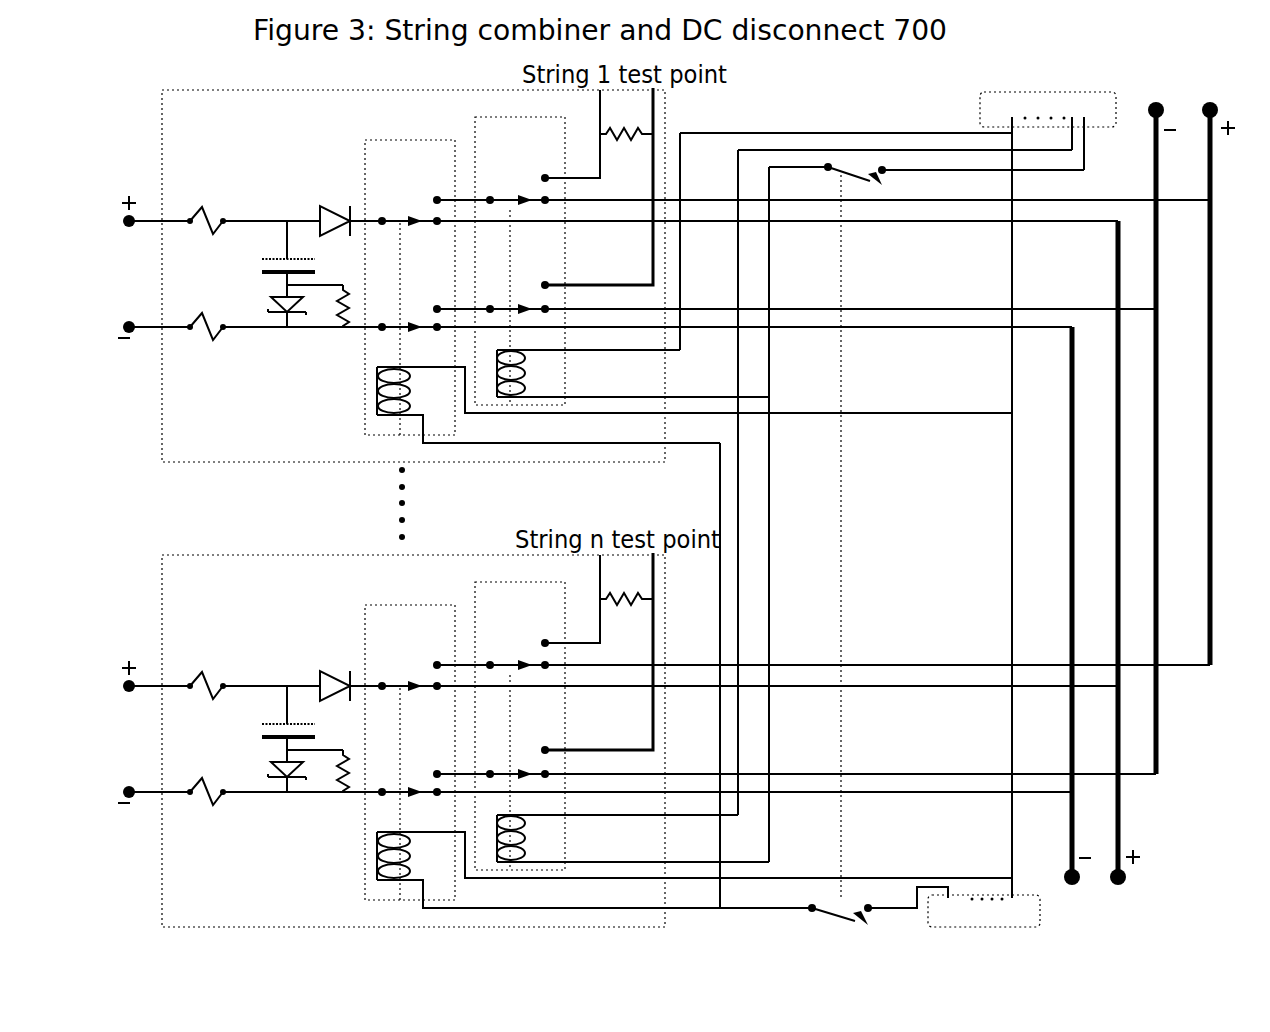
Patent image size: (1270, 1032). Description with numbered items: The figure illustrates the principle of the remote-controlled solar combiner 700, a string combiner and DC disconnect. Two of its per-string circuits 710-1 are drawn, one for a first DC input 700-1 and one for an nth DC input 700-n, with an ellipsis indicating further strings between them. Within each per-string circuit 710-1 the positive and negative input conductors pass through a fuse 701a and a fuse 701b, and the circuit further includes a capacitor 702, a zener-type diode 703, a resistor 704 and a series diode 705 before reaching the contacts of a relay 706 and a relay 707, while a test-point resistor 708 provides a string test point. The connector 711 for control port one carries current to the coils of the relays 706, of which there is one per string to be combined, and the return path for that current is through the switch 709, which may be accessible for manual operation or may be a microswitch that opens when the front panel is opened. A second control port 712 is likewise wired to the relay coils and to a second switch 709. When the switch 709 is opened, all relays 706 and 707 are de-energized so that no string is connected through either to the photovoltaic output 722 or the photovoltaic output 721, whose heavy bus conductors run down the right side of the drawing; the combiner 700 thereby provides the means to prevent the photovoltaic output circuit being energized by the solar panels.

The remote-controlled solar combiner 700 is at (669, 503).
The DC input 1 700-1 is at (141, 267).
The DC input n 700-n is at (141, 732).
The fuse 701a is at (212, 432).
The fuse 701b is at (213, 581).
The capacitor 702 is at (263, 502).
The zener diode 703 is at (267, 537).
The resistor 704 is at (335, 780).
The diode 705 is at (331, 443).
The relay 706 is at (688, 524).
The relay 707 is at (601, 493).
The test point resistor 708 is at (597, 421).
The switch 709 is at (920, 550).
The per string circuit 710-1 is at (413, 508).
The connector for Control port 1 711 is at (978, 892).
The control port 2 712 is at (1059, 97).
The photovoltaic output 2 721 is at (1105, 577).
The photovoltaic output 1 722 is at (1195, 421).